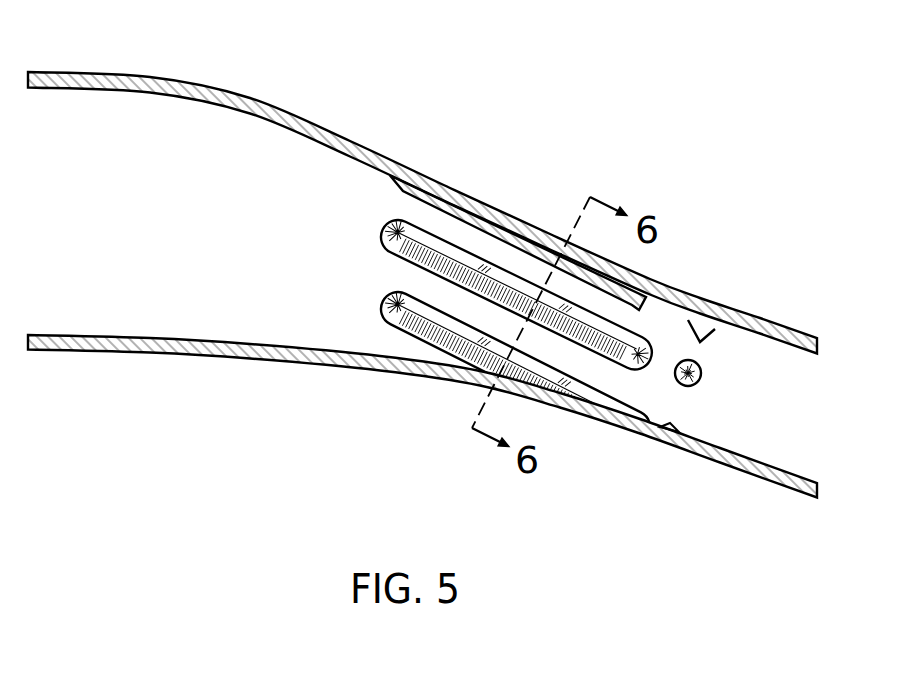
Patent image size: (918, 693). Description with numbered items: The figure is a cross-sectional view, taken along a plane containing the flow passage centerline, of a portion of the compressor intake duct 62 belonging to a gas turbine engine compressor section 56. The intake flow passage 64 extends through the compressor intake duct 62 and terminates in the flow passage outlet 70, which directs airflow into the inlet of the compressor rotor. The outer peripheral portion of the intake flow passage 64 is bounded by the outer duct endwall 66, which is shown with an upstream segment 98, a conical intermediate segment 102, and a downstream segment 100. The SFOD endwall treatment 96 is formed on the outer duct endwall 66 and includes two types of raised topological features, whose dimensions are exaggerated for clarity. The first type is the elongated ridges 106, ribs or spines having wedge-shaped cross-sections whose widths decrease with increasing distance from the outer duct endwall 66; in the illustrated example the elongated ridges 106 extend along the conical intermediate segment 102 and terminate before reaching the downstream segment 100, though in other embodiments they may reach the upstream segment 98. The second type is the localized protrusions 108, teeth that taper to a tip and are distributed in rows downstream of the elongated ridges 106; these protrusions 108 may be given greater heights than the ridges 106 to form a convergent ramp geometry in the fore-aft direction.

The GTE compressor section 56 is at (124, 402).
The compressor intake duct 62 is at (58, 380).
The intake flow passage 64 is at (97, 222).
The outer duct endwall 66 is at (236, 110).
The flow passage outlet 70 is at (815, 426).
The SFOD endwall treatment 96 is at (280, 206).
The upstream segment 98 is at (77, 72).
The downstream segment 100 is at (785, 310).
The conical intermediate segment 102 is at (475, 200).
The elongated ridges 106 is at (422, 193).
The localized protrusions 108 is at (703, 330).